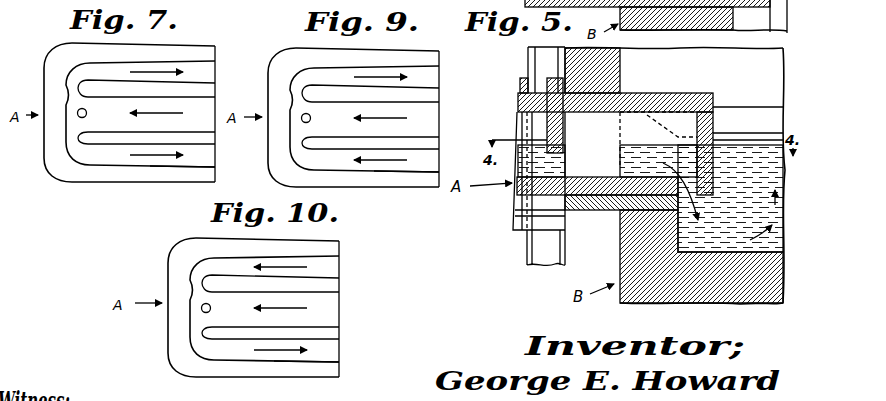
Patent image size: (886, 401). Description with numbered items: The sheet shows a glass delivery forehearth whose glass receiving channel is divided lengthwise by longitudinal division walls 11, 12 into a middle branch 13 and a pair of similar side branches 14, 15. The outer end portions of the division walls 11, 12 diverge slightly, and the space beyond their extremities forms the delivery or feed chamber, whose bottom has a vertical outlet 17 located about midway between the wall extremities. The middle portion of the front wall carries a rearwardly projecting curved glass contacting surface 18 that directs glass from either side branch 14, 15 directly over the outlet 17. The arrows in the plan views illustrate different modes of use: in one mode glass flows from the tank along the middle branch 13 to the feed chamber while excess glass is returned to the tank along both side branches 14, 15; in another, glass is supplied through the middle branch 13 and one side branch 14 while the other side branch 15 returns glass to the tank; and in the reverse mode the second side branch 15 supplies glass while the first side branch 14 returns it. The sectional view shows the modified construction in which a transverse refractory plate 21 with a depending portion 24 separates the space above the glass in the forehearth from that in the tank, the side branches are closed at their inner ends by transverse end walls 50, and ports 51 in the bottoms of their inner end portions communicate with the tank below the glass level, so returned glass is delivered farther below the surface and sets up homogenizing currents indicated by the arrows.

In FIG. 7, the longitudinal division wall 11 is at (152, 90).
In FIG. 9, the longitudinal division wall 11 is at (407, 111).
In FIG. 10, the longitudinal division wall 11 is at (307, 301).
In FIG. 7, the longitudinal division wall 12 is at (154, 138).
In FIG. 9, the longitudinal division wall 12 is at (406, 173).
In FIG. 10, the longitudinal division wall 12 is at (306, 365).
In FIG. 7, the middle branch 13 is at (168, 113).
In FIG. 9, the middle branch 13 is at (392, 118).
In FIG. 10, the middle branch 13 is at (292, 309).
In FIG. 7, the side branch 14 is at (146, 81).
In FIG. 9, the side branch 14 is at (370, 86).
In FIG. 10, the side branch 14 is at (270, 277).
In FIG. 7, the side branch 15 is at (146, 147).
In FIG. 9, the side branch 15 is at (370, 152).
In FIG. 10, the side branch 15 is at (270, 343).
In FIG. 7, the vertical outlet 17 is at (79, 116).
In FIG. 9, the vertical outlet 17 is at (273, 135).
In FIG. 10, the vertical outlet 17 is at (169, 325).
In FIG. 7, the rearwardly projecting curved glass contacting surface 18 is at (62, 92).
In FIG. 9, the rearwardly projecting curved glass contacting surface 18 is at (336, 117).
In FIG. 10, the rearwardly projecting curved glass contacting surface 18 is at (235, 307).
In FIG. 5, the transverse refractory plate 21 is at (537, 87).
In FIG. 5, the depending spaced portion 24 is at (565, 140).
In FIG. 5, the transverse end wall 50 is at (713, 120).
In FIG. 5, the port 51 is at (677, 190).